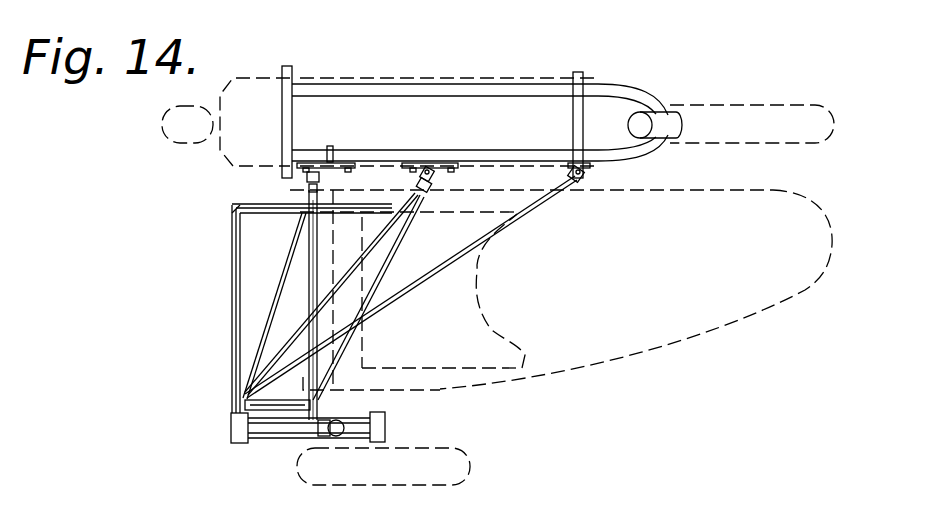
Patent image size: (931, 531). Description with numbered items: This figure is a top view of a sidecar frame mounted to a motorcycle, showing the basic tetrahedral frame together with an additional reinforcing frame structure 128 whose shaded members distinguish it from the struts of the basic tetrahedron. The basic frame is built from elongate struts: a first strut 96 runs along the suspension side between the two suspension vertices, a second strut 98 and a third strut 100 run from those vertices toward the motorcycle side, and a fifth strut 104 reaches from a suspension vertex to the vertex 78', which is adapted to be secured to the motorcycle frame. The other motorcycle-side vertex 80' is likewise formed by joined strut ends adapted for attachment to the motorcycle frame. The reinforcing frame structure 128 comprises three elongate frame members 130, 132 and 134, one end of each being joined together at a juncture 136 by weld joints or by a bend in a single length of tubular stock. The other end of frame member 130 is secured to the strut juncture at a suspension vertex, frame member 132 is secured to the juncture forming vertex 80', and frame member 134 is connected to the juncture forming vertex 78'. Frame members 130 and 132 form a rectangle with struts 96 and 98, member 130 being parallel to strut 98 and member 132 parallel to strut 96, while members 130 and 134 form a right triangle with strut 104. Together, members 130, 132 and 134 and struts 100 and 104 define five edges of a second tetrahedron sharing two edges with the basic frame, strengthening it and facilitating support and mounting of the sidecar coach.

The vertex 80' is at (347, 270).
The vertex 78' is at (438, 209).
The frame member 130 is at (240, 291).
The frame member 132 is at (258, 206).
The juncture 136 is at (236, 208).
The frame member 134 is at (304, 232).
The strut 100 is at (250, 357).
The strut 98 is at (315, 345).
The strut 104 is at (340, 282).
The strut 96 is at (262, 404).
The frame structure 128 is at (216, 399).